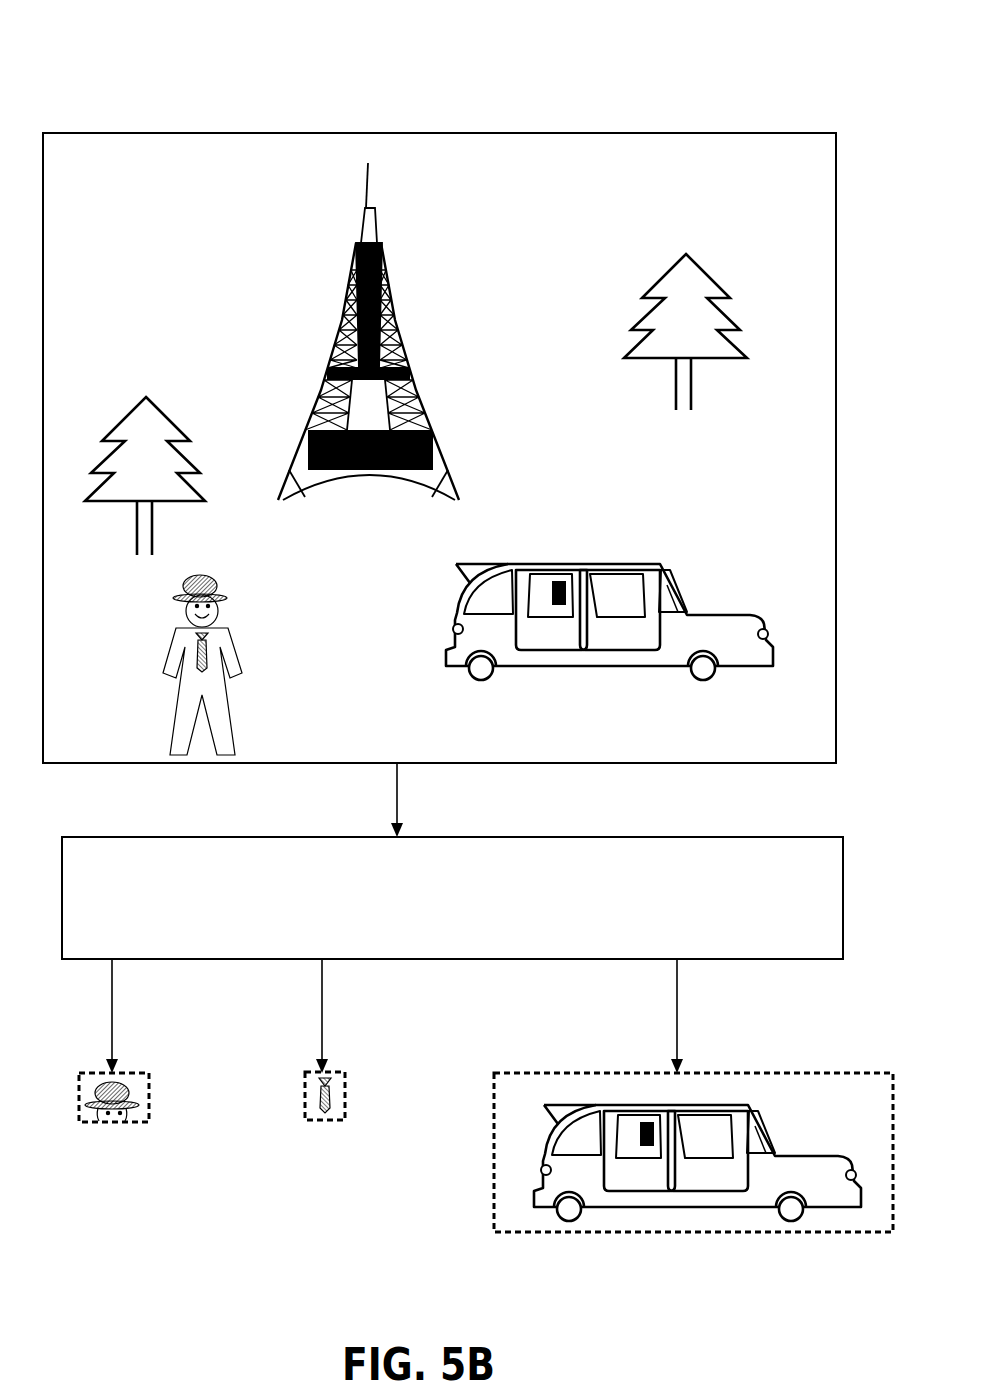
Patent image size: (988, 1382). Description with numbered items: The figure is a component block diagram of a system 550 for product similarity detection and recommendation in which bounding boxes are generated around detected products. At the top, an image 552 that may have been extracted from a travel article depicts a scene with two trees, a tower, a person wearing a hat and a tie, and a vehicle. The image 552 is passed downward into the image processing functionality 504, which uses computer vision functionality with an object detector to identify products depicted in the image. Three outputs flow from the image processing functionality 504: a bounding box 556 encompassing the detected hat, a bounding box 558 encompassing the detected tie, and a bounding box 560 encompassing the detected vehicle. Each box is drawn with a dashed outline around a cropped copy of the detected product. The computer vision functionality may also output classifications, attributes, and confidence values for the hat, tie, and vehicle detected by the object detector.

The system 550 is at (118, 52).
The image 552 is at (715, 133).
The image processing functionality 504 is at (760, 837).
The bounding box 556 is at (90, 1123).
The bounding box 558 is at (313, 1122).
The bounding box 560 is at (665, 1233).